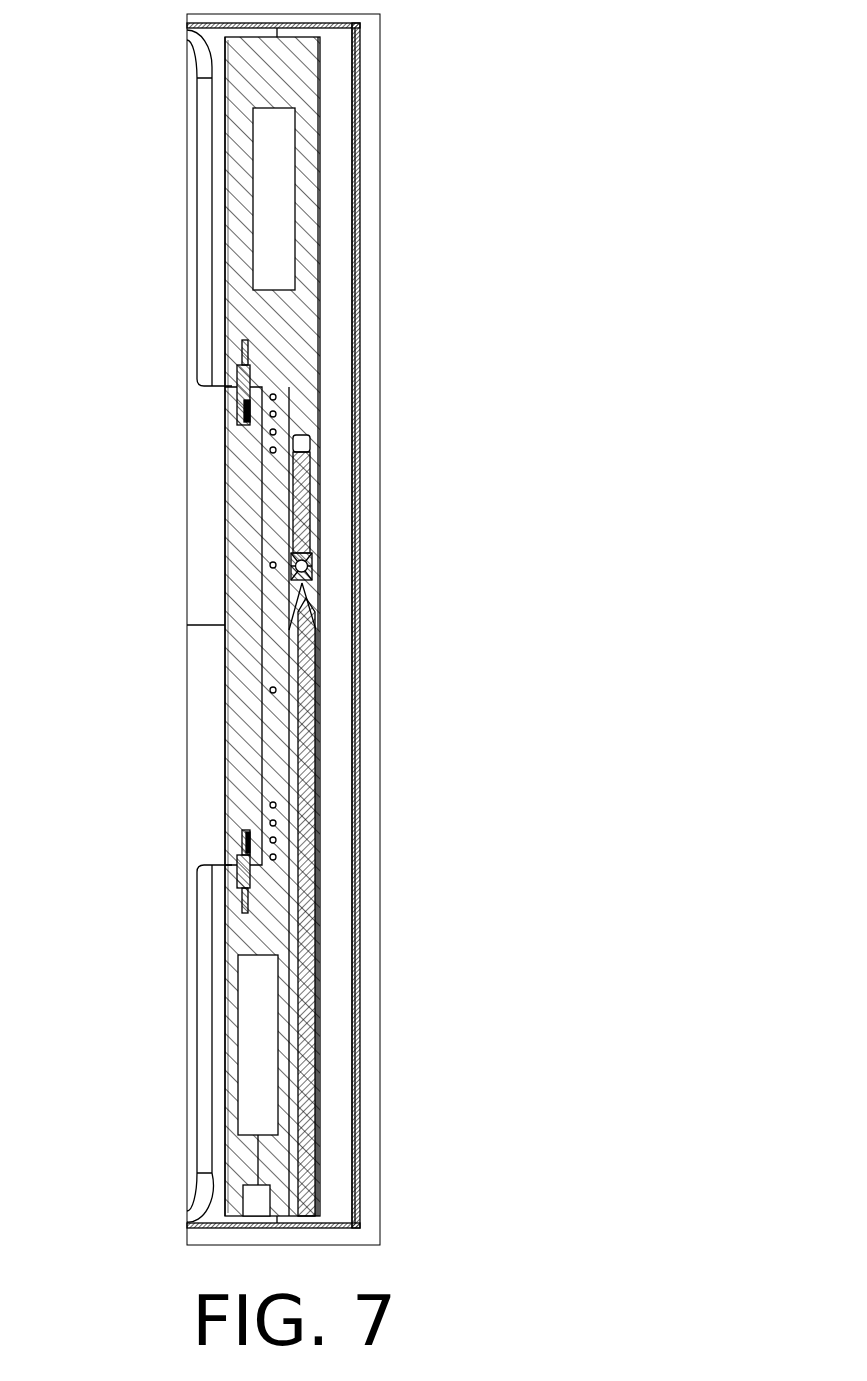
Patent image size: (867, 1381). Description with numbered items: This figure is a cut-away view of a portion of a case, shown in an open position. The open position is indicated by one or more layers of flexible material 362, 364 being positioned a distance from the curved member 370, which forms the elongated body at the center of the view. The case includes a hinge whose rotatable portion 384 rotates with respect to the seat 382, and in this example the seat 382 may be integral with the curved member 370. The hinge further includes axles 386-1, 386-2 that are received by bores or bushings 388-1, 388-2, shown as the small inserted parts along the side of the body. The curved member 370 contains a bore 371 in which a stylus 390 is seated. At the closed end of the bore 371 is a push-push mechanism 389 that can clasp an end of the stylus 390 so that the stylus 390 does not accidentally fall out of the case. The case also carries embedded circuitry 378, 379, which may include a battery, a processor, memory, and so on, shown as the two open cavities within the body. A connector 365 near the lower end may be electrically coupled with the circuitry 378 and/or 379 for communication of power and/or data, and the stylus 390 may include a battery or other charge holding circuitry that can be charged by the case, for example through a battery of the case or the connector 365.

The layer of flexible material 362 is at (361, 233).
The layer of flexible material 364 is at (352, 279).
The connector 365 is at (252, 1200).
The curved member 370 is at (318, 380).
The bore 371 is at (318, 627).
The embedded circuitry 378 is at (258, 1057).
The embedded circuitry 379 is at (270, 220).
The seat 382 is at (272, 524).
The rotatable portion 384 is at (232, 557).
The axle 386-1 is at (240, 417).
The axle 386-2 is at (242, 862).
The bore or bushing 388-1 is at (237, 373).
The bore or bushing 388-2 is at (243, 897).
The push-push mechanism 389 is at (302, 556).
The stylus 390 is at (316, 737).